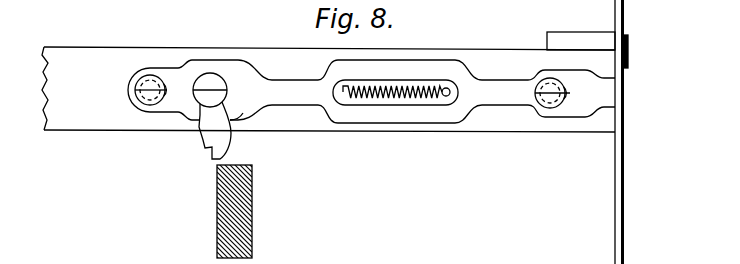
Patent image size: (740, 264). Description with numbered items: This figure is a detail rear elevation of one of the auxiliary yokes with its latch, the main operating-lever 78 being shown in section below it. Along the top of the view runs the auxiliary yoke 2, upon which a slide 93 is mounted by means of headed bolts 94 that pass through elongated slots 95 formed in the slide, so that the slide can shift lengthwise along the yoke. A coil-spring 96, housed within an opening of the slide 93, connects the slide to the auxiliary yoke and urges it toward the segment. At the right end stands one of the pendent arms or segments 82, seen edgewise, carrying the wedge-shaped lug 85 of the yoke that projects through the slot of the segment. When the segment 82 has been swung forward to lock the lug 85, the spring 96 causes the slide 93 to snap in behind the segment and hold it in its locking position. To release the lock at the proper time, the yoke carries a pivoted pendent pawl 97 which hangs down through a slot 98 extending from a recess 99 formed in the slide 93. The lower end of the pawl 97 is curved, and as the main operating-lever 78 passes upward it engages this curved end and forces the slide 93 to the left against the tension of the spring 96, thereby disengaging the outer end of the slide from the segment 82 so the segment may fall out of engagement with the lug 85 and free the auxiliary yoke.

The bar 2 is at (328, 82).
The main operating-lever 78 is at (225, 191).
The pendent arm 82 is at (615, 202).
The wedge-shaped lug 85 is at (629, 51).
The slide 93 is at (371, 91).
The headed bolt 94 is at (133, 88).
The elongated slot 95 is at (170, 97).
The coil-spring 96 is at (381, 92).
The pivoted pendent pawl 97 is at (213, 128).
The slot 98 is at (228, 118).
The recess 99 is at (247, 87).